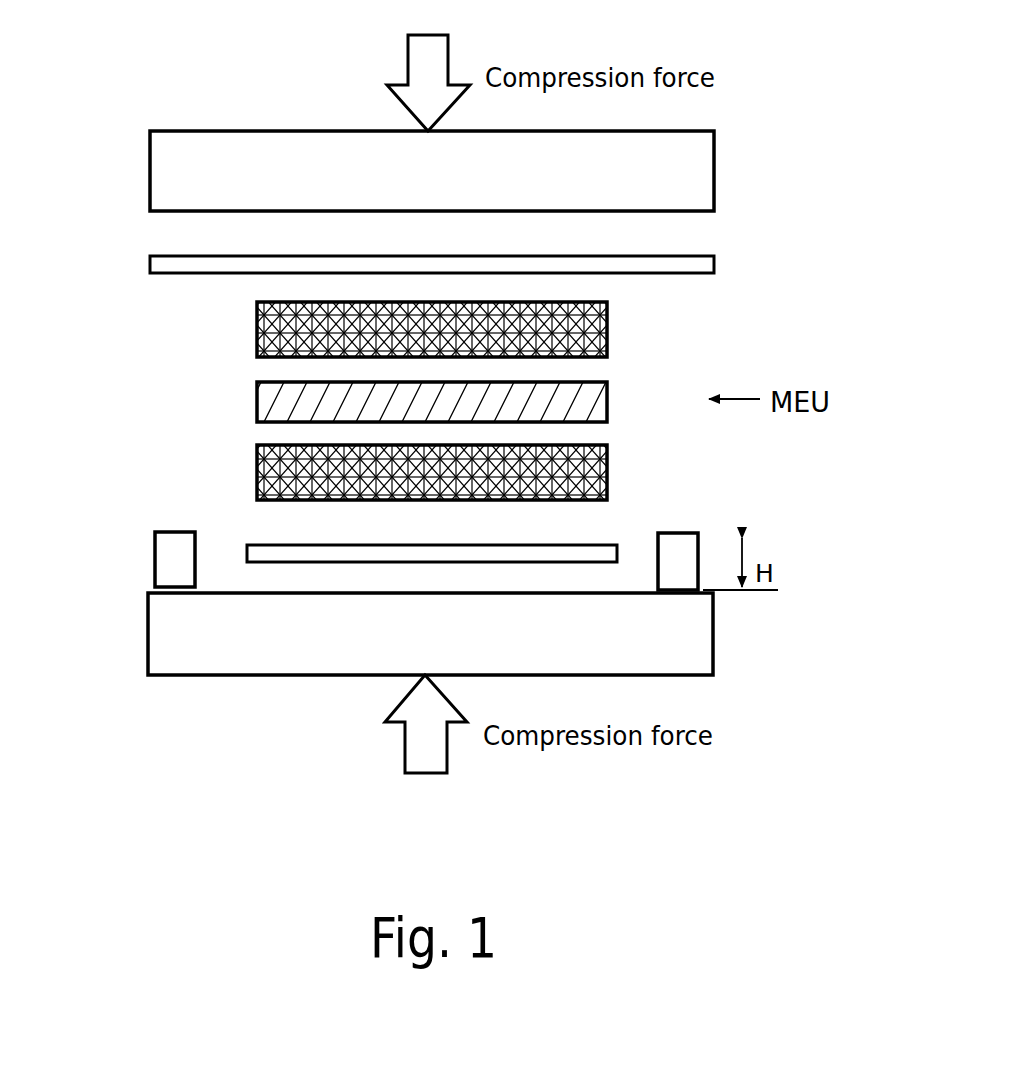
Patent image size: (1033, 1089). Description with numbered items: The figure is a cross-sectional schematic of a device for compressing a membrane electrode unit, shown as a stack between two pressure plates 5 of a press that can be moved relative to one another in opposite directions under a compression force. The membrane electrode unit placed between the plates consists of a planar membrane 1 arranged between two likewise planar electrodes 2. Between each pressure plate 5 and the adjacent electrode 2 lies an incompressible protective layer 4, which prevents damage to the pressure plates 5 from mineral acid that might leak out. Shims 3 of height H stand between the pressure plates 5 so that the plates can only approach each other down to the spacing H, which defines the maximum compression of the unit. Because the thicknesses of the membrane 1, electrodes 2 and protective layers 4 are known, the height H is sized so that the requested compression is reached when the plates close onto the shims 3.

The membrane 1 is at (257, 408).
The electrodes 2 is at (257, 332).
The shims 3 is at (155, 558).
The protective layer 4 is at (150, 265).
The pressure plates 5 is at (150, 192).